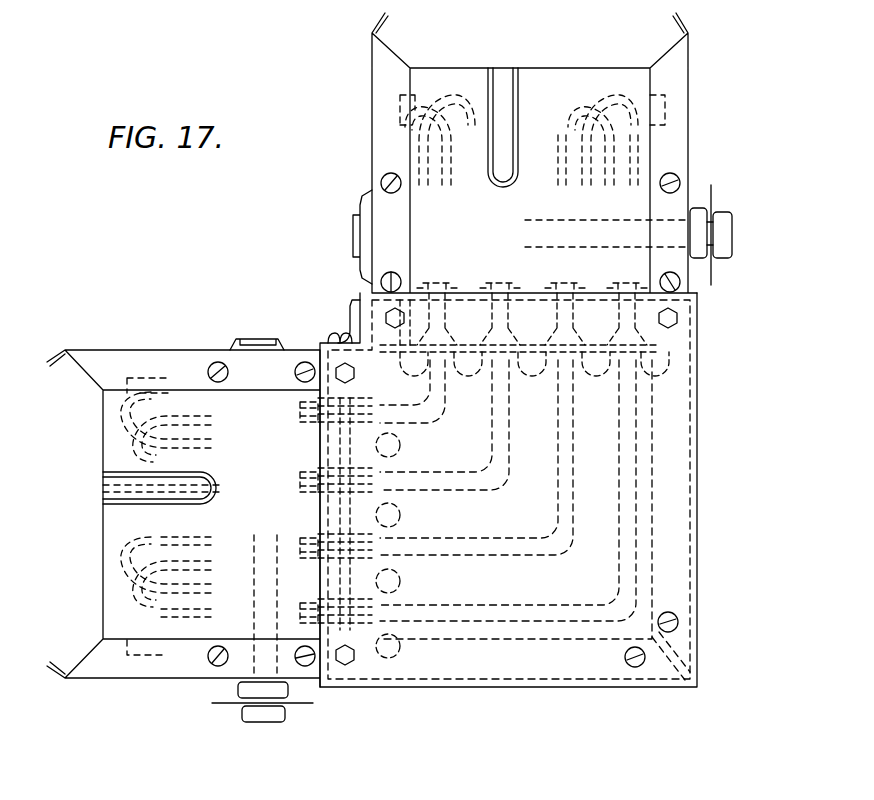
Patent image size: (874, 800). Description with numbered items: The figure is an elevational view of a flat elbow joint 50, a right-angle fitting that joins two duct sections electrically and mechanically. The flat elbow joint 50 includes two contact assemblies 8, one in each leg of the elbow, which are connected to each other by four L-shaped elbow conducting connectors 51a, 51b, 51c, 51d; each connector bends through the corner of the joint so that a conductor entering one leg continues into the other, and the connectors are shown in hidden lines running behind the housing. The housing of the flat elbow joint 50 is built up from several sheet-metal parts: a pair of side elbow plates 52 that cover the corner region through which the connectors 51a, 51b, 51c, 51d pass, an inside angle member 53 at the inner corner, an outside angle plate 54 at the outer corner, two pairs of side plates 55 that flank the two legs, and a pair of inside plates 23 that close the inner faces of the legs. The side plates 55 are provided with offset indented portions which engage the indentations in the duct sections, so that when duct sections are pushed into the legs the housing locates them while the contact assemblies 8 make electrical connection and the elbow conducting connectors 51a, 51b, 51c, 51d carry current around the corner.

The contact assembly 8 is at (575, 100).
The inside plate 23 is at (372, 134).
The flat elbow joint 50 is at (229, 242).
The elbow conducting connector 51a is at (412, 424).
The elbow conducting connector 51b is at (440, 489).
The elbow conducting connector 51c is at (498, 556).
The elbow conducting connector 51d is at (575, 605).
The side elbow plate 52 is at (672, 555).
The inside angle member 53 is at (355, 299).
The outside angle plate 54 is at (690, 160).
The side plate 55 is at (487, 229).